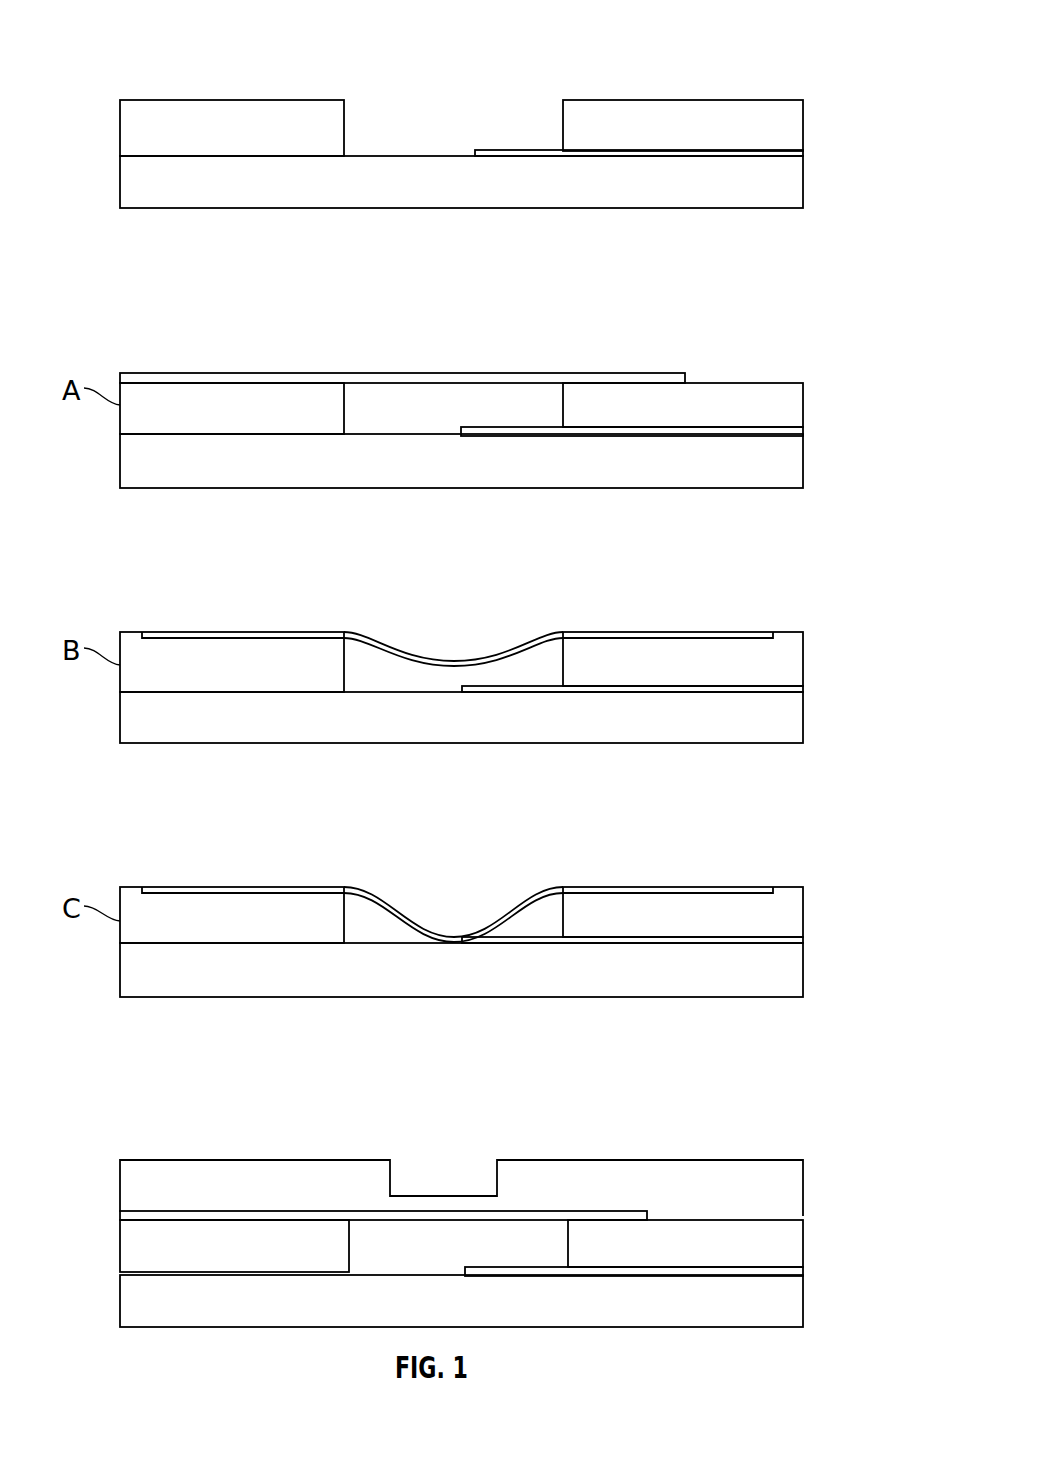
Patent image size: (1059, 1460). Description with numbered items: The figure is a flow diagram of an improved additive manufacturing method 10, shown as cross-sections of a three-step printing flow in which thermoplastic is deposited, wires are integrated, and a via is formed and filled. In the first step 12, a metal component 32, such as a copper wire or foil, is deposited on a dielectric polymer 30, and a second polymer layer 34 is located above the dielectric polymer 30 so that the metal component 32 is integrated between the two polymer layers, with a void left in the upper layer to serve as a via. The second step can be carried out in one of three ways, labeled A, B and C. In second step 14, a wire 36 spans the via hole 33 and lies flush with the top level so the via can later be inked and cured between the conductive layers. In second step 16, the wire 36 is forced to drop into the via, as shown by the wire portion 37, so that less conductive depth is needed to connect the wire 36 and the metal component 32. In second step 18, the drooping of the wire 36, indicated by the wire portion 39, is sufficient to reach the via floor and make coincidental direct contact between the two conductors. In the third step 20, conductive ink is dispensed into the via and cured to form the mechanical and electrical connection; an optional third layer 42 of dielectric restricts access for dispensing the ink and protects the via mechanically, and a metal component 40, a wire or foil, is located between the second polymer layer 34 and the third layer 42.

The AM method 10 is at (803, 38).
The first step 12 is at (113, 74).
The second step A 14 is at (113, 332).
The second step B 16 is at (113, 594).
The second step C 18 is at (113, 854).
The third step 20 is at (113, 1132).
The dielectric polymer 30 is at (130, 181).
The metal component 32 is at (505, 149).
The via hole 33 is at (388, 392).
The second polymer layer 34 is at (130, 126).
The wire 36 is at (633, 378).
The wire portion 37 is at (418, 660).
The wire portion 39 is at (383, 922).
The metal component 40 is at (408, 1218).
The third layer 42 is at (795, 1190).